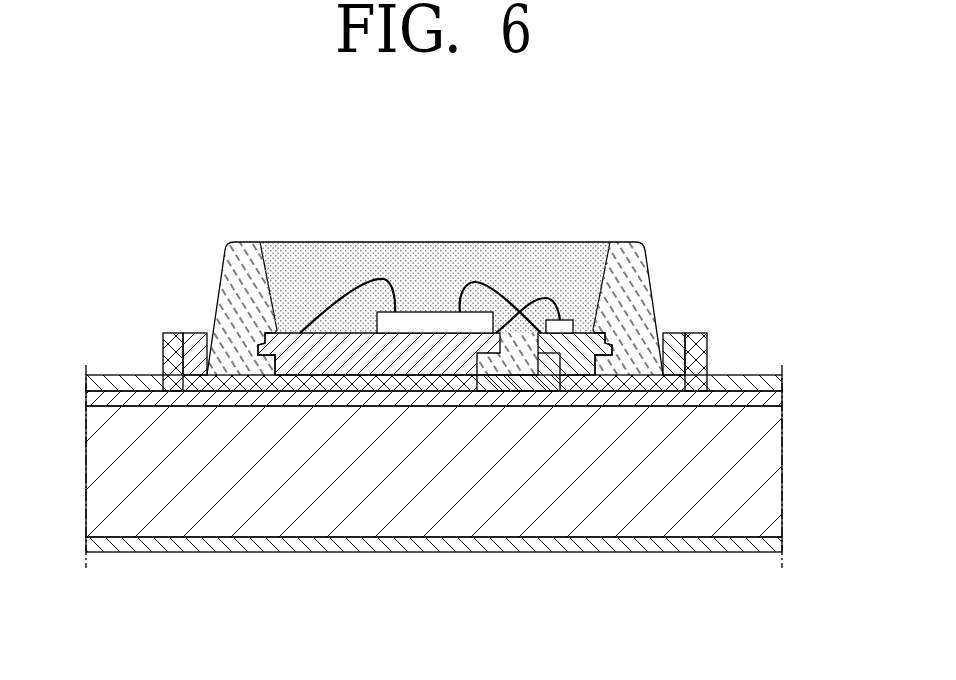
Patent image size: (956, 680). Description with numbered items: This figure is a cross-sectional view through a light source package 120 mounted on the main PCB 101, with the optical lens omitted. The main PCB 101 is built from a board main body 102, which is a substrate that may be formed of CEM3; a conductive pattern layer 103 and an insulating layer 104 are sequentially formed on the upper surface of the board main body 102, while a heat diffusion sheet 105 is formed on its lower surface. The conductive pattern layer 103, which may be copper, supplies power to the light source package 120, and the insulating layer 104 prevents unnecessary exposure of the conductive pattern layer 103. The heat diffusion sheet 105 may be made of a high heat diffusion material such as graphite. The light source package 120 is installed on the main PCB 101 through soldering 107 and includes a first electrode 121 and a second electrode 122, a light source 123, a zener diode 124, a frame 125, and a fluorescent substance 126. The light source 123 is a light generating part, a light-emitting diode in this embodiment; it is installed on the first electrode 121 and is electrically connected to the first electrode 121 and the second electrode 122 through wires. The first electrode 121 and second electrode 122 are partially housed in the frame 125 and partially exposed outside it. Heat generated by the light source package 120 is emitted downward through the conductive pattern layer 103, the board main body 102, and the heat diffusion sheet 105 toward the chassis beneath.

The main PCB 101 is at (433, 460).
The board main body 102 is at (775, 455).
The conductive pattern layer 103 is at (775, 400).
The insulating layer 104 is at (775, 380).
The heat diffusion sheet 105 is at (775, 546).
The soldering 107 is at (172, 348).
The light source package 120 is at (435, 258).
The first electrode 121 is at (200, 333).
The second electrode 122 is at (672, 340).
The light source 123 is at (433, 320).
The zener diode 124 is at (563, 323).
The frame 125 is at (246, 258).
The fluorescent substance 126 is at (525, 255).